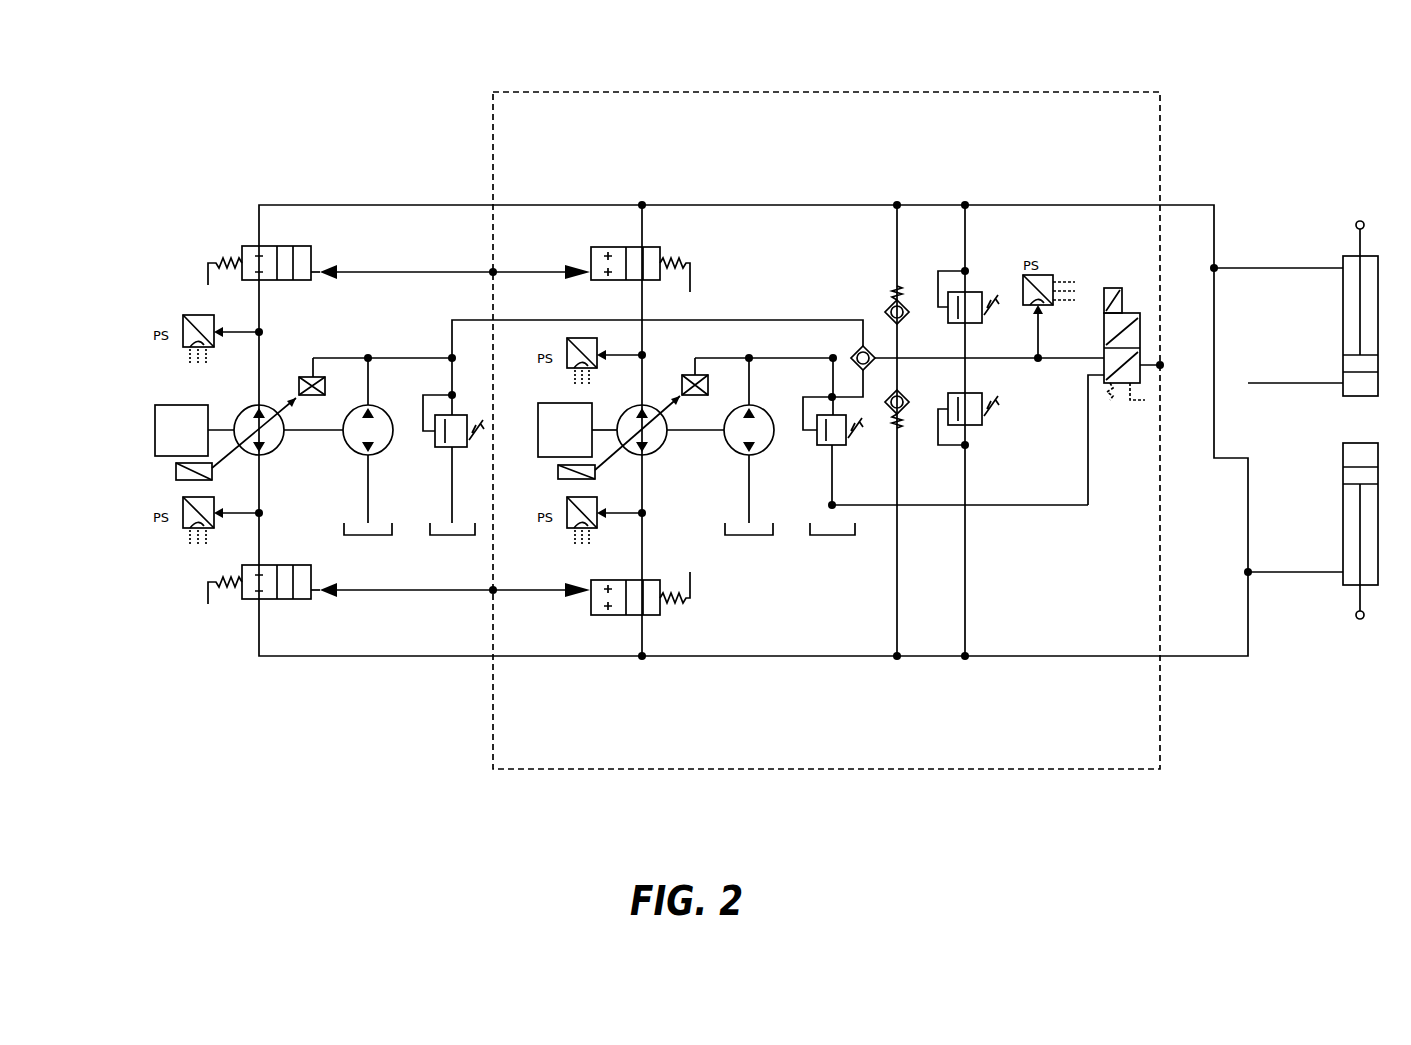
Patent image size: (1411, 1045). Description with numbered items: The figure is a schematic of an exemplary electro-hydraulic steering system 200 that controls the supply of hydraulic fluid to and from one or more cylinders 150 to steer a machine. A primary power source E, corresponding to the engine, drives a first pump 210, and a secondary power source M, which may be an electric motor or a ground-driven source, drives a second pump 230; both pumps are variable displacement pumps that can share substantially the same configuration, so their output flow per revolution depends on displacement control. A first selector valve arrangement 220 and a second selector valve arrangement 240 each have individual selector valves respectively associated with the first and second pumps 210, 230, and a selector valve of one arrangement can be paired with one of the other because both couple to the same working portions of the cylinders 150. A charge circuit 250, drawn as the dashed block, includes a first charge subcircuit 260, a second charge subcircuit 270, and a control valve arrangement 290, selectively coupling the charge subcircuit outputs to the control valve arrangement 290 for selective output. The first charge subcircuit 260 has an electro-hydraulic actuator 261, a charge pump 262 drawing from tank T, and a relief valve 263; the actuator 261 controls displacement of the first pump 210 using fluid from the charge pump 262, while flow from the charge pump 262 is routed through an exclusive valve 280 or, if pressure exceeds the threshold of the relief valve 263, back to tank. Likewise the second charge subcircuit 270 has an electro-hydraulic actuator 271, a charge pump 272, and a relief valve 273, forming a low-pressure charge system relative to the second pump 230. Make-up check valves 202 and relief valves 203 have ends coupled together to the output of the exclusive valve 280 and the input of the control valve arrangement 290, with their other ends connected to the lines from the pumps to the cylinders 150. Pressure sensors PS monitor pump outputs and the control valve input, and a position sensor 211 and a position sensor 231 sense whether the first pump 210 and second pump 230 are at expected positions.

The electro-hydraulic steering system 200 is at (283, 62).
The cylinders 150 is at (1345, 292).
The check valves 202 is at (900, 298).
The relief valves 203 is at (975, 292).
The first pump 210 is at (657, 450).
The position sensor 211 is at (553, 477).
The first selector valve arrangement 220 is at (615, 247).
The second pump 230 is at (265, 453).
The position sensor 231 is at (178, 468).
The second selector valve arrangement 240 is at (247, 246).
The charge circuit 250 is at (1053, 570).
The first charge subcircuit 260 is at (804, 298).
The electro-hydraulic actuator 261 is at (688, 378).
The charge pump 262 is at (760, 453).
The relief valve 263 is at (850, 450).
The second charge subcircuit 270 is at (402, 322).
The electro-hydraulic actuator 271 is at (300, 382).
The charge pump 272 is at (376, 453).
The relief valve 273 is at (460, 450).
The exclusive valve 280 is at (862, 346).
The control valve arrangement 290 is at (1120, 385).